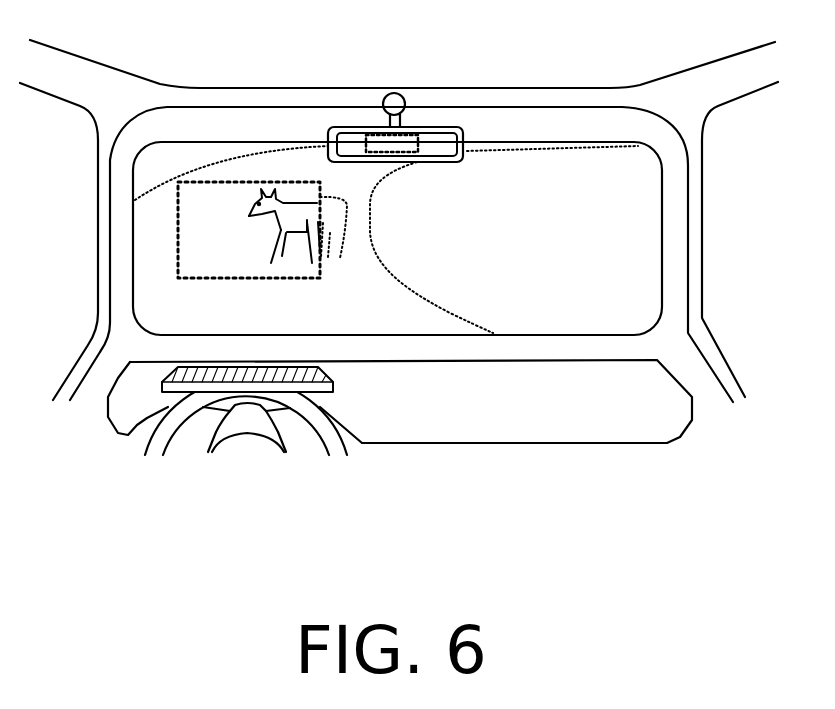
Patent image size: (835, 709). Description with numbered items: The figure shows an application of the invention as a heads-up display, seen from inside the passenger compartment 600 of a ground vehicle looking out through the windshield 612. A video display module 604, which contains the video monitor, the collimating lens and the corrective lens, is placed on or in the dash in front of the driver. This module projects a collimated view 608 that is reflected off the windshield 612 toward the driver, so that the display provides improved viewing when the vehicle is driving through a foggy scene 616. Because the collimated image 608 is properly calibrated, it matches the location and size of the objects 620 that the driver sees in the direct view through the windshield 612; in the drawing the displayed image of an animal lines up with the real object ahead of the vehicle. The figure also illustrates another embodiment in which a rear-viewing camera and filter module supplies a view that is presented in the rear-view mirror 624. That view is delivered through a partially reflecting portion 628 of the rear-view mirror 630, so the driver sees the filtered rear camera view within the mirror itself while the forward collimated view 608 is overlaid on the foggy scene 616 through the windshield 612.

The passenger compartment 600 is at (303, 88).
The video display module 604 is at (167, 383).
The collimated view 608 is at (178, 215).
The windshield 612 is at (595, 143).
The foggy scene 616 is at (598, 268).
The objects 620 is at (250, 214).
The rear-view mirror 624 is at (423, 125).
The partially reflecting portion 628 is at (420, 143).
The rear-view mirror 630 is at (467, 138).